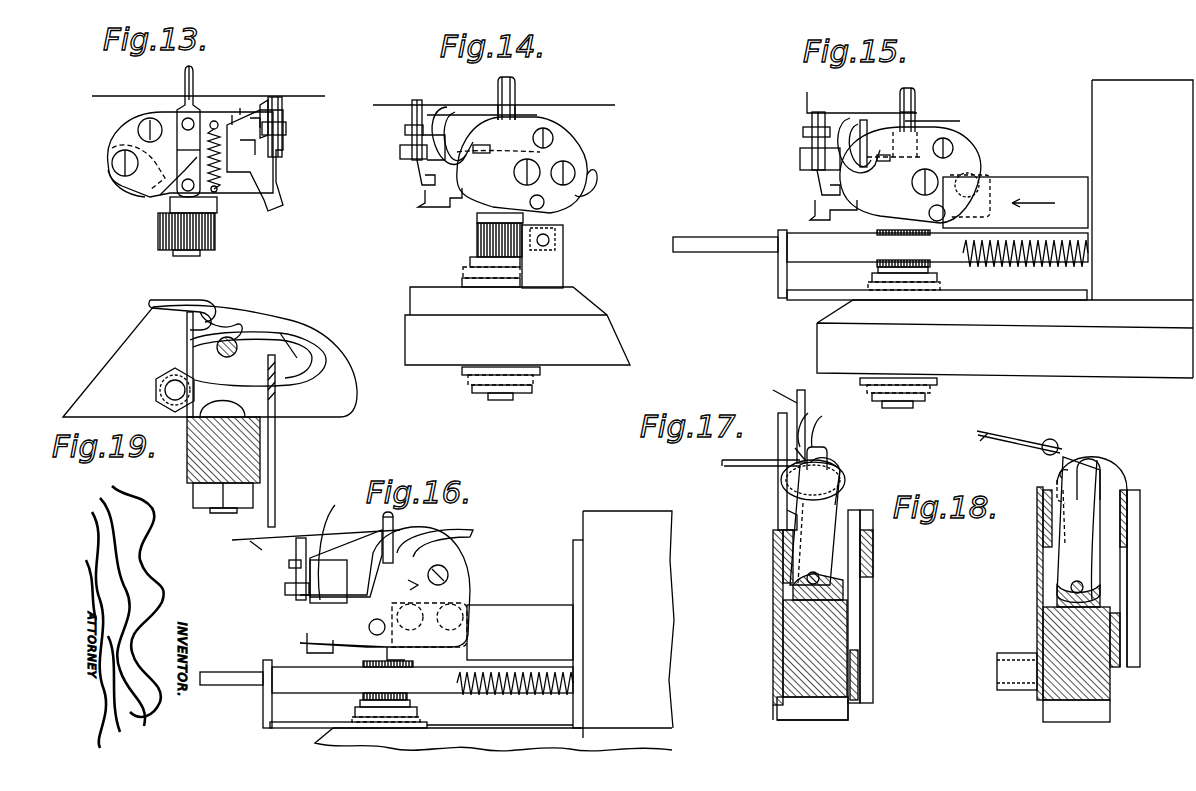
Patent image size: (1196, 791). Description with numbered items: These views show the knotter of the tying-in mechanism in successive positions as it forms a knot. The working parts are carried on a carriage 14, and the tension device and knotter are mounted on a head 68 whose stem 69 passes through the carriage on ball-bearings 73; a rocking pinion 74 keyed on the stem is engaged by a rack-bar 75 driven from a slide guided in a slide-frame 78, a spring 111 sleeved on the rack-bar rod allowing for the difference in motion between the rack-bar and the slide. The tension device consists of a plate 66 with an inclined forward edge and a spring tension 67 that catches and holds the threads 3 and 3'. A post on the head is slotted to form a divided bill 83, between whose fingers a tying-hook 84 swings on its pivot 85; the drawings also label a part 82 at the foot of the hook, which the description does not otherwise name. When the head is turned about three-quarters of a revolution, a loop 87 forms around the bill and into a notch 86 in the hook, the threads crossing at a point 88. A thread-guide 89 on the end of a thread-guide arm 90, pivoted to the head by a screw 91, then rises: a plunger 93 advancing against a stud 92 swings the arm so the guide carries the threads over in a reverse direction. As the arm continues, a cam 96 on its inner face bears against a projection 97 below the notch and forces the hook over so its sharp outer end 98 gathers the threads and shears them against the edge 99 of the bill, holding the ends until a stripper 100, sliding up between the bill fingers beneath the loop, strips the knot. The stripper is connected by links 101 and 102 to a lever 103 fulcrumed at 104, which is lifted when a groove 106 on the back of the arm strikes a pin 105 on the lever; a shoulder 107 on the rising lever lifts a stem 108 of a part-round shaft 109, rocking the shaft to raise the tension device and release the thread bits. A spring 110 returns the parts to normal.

In FIG. 13, the thread 3 is at (208, 111).
In FIG. 14, the thread 3 is at (489, 92).
In FIG. 15, the thread 3 is at (844, 99).
In FIG. 16, the thread 3 is at (315, 527).
In FIG. 17, the thread 3 is at (815, 425).
In FIG. 18, the thread 3 is at (1019, 434).
In FIG. 16, the thread 3' is at (253, 552).
In FIG. 17, the thread 3' is at (778, 390).
In FIG. 18, the thread 3' is at (985, 447).
In FIG. 14, the carriage 14 is at (606, 340).
In FIG. 15, the carriage 14 is at (817, 347).
In FIG. 16, the carriage 14 is at (536, 748).
In FIG. 14, the plate 66 is at (400, 150).
In FIG. 19, the plate 66 is at (120, 355).
In FIG. 13, the spring tension 67 is at (283, 103).
In FIG. 14, the spring tension 67 is at (417, 100).
In FIG. 15, the spring tension 67 is at (819, 112).
In FIG. 19, the spring tension 67 is at (187, 300).
In FIG. 16, the spring tension 67 is at (300, 538).
In FIG. 13, the head 68 is at (205, 208).
In FIG. 14, the head 68 is at (483, 218).
In FIG. 19, the head 68 is at (205, 455).
In FIG. 17, the head 68 is at (835, 627).
In FIG. 18, the head 68 is at (1050, 627).
In FIG. 14, the stem 69 is at (500, 400).
In FIG. 15, the stem 69 is at (908, 408).
In FIG. 14, the ball-bearings 73 is at (470, 378).
In FIG. 15, the ball-bearings 73 is at (872, 281).
In FIG. 16, the ball-bearings 73 is at (358, 713).
In FIG. 13, the rocking pinion 74 is at (158, 228).
In FIG. 14, the rocking pinion 74 is at (480, 243).
In FIG. 15, the rocking pinion 74 is at (935, 266).
In FIG. 16, the rocking pinion 74 is at (363, 663).
In FIG. 14, the rack-bar 75 is at (548, 247).
In FIG. 15, the rack-bar 75 is at (880, 265).
In FIG. 16, the rack-bar 75 is at (386, 694).
In FIG. 15, the slide-frame 78 is at (1092, 108).
In FIG. 16, the slide-frame 78 is at (583, 525).
In FIG. 17, the pivot wedge 82 is at (840, 590).
In FIG. 18, the pivot wedge 82 is at (1100, 590).
In FIG. 13, the divided bill 83 is at (192, 72).
In FIG. 14, the divided bill 83 is at (512, 80).
In FIG. 15, the divided bill 83 is at (916, 93).
In FIG. 16, the divided bill 83 is at (395, 523).
In FIG. 17, the divided bill 83 is at (827, 462).
In FIG. 18, the divided bill 83 is at (1090, 480).
In FIG. 14, the tying-hook 84 is at (525, 115).
In FIG. 15, the tying-hook 84 is at (920, 122).
In FIG. 16, the tying-hook 84 is at (385, 520).
In FIG. 17, the tying-hook 84 is at (820, 520).
In FIG. 18, the tying-hook 84 is at (1085, 530).
In FIG. 17, the pivot 85 is at (807, 580).
In FIG. 18, the pivot 85 is at (1072, 585).
In FIG. 14, the notch 86 is at (516, 104).
In FIG. 15, the notch 86 is at (917, 113).
In FIG. 17, the notch 86 is at (778, 503).
In FIG. 18, the notch 86 is at (1068, 505).
In FIG. 17, the loop 87 is at (838, 485).
In FIG. 17, the point 88 is at (840, 465).
In FIG. 14, the thread-guide 89 is at (447, 107).
In FIG. 15, the thread-guide 89 is at (858, 125).
In FIG. 19, the thread-guide 89 is at (225, 315).
In FIG. 16, the thread-guide 89 is at (470, 533).
In FIG. 17, the thread-guide 89 is at (820, 428).
In FIG. 14, the thread-guide arm 90 is at (527, 165).
In FIG. 15, the thread-guide arm 90 is at (910, 175).
In FIG. 19, the thread-guide arm 90 is at (170, 368).
In FIG. 16, the thread-guide arm 90 is at (370, 605).
In FIG. 17, the thread-guide arm 90 is at (773, 562).
In FIG. 18, the thread-guide arm 90 is at (1037, 590).
In FIG. 14, the screw 91 is at (535, 170).
In FIG. 15, the screw 91 is at (937, 183).
In FIG. 14, the stud 92 is at (547, 205).
In FIG. 15, the stud 92 is at (929, 211).
In FIG. 16, the stud 92 is at (400, 633).
In FIG. 18, the stud 92 is at (1005, 690).
In FIG. 15, the plunger 93 is at (1010, 183).
In FIG. 16, the plunger 93 is at (518, 618).
In FIG. 17, the cam 96 is at (783, 540).
In FIG. 18, the cam 96 is at (1043, 492).
In FIG. 17, the projection 97 is at (787, 520).
In FIG. 18, the projection 97 is at (1057, 518).
In FIG. 17, the outer end 98 is at (790, 462).
In FIG. 17, the edge 99 is at (812, 455).
In FIG. 13, the stripper 100 is at (195, 92).
In FIG. 17, the stripper 100 is at (860, 520).
In FIG. 18, the stripper 100 is at (1100, 452).
In FIG. 13, the link 101 is at (173, 176).
In FIG. 17, the link 101 is at (873, 601).
In FIG. 18, the link 101 is at (1127, 550).
In FIG. 13, the link 102 is at (123, 182).
In FIG. 13, the lever 103 is at (170, 113).
In FIG. 14, the lever 103 is at (425, 205).
In FIG. 15, the lever 103 is at (812, 219).
In FIG. 19, the lever 103 is at (275, 442).
In FIG. 16, the lever 103 is at (377, 563).
In FIG. 13, the fulcrum 104 is at (118, 152).
In FIG. 16, the fulcrum 104 is at (470, 605).
In FIG. 16, the pin 105 is at (448, 573).
In FIG. 16, the groove 106 is at (407, 587).
In FIG. 13, the shoulder 107 is at (272, 160).
In FIG. 13, the stem 108 is at (265, 100).
In FIG. 14, the stem 108 is at (487, 153).
In FIG. 19, the stem 108 is at (298, 352).
In FIG. 16, the stem 108 is at (332, 546).
In FIG. 13, the shaft 109 is at (286, 128).
In FIG. 14, the shaft 109 is at (405, 128).
In FIG. 15, the shaft 109 is at (803, 132).
In FIG. 19, the shaft 109 is at (235, 340).
In FIG. 16, the shaft 109 is at (289, 566).
In FIG. 13, the spring 110 is at (218, 165).
In FIG. 14, the spring 110 is at (430, 168).
In FIG. 15, the spring 110 is at (835, 172).
In FIG. 15, the spring 111 is at (1064, 266).
In FIG. 16, the spring 111 is at (528, 697).